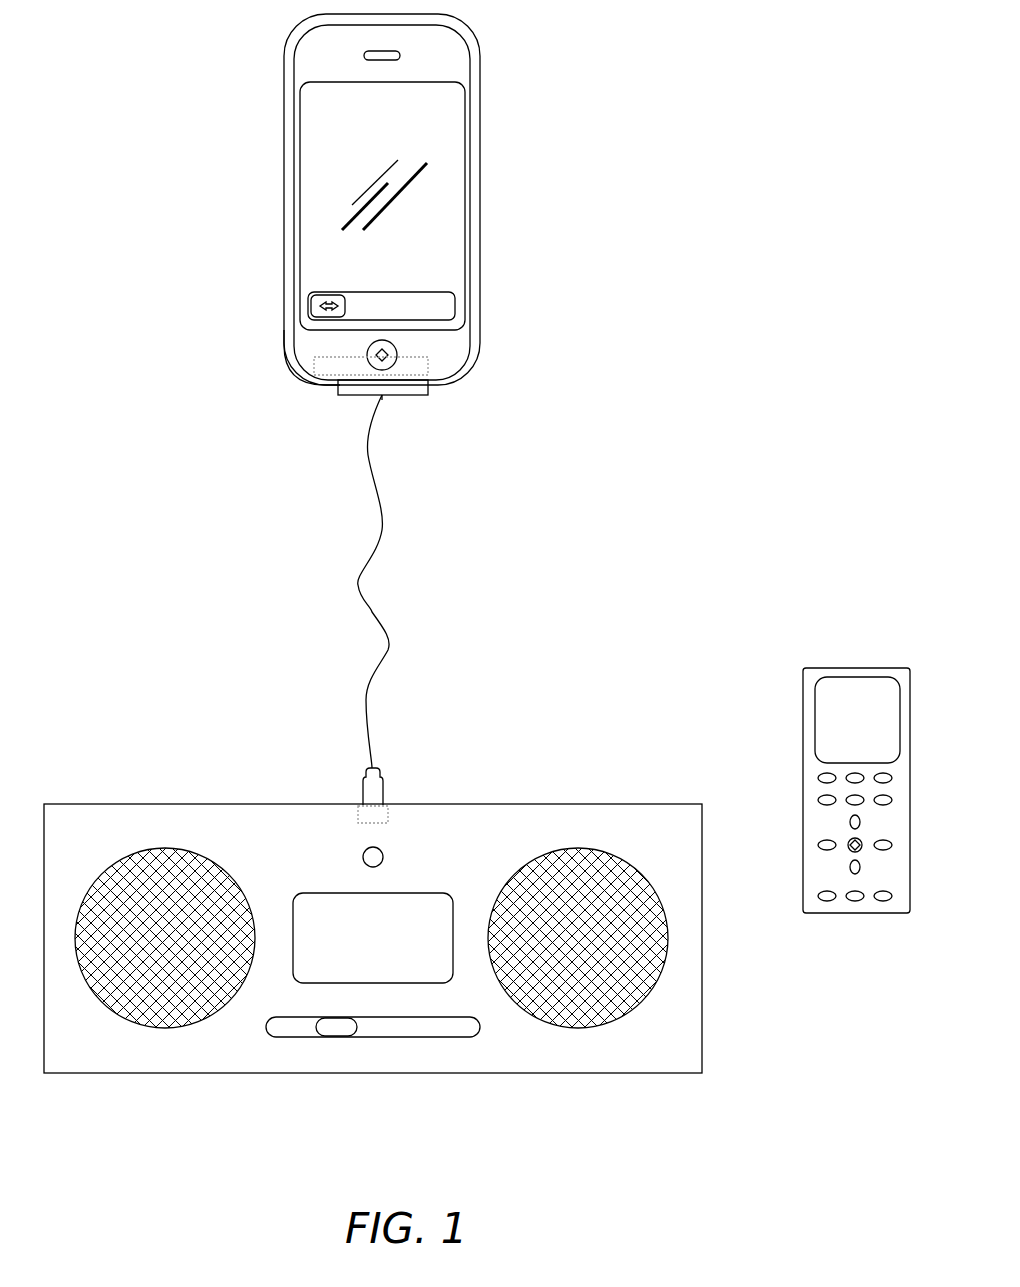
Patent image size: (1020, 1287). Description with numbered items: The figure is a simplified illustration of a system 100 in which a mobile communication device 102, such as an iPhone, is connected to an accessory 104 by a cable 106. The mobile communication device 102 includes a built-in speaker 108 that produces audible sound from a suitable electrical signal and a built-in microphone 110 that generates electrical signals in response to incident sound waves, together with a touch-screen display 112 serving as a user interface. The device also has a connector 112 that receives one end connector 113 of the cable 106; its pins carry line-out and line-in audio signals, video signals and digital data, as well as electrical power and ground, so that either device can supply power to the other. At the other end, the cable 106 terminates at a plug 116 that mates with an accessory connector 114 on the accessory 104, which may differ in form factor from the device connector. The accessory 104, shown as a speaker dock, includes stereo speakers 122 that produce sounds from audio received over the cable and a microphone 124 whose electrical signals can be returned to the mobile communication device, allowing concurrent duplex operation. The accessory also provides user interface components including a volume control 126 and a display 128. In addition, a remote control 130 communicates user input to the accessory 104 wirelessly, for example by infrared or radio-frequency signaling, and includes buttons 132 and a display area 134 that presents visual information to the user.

The system 100 is at (166, 196).
The mobile communication device 102 is at (480, 285).
The accessory 104 is at (665, 805).
The cable 106 is at (366, 600).
The built-in speaker 108 is at (400, 55).
The built-in microphone 110 is at (314, 367).
The connector 112 is at (430, 367).
The end connector 113 is at (432, 395).
The accessory connector 114 is at (388, 812).
The cable plug 116 is at (385, 790).
The stereo speakers 122 is at (158, 848).
The microphone 124 is at (363, 857).
The volume control 126 is at (400, 1037).
The display 128 is at (373, 938).
The remote control 130 is at (855, 668).
The buttons 132 is at (857, 873).
The display area 134 is at (857, 720).